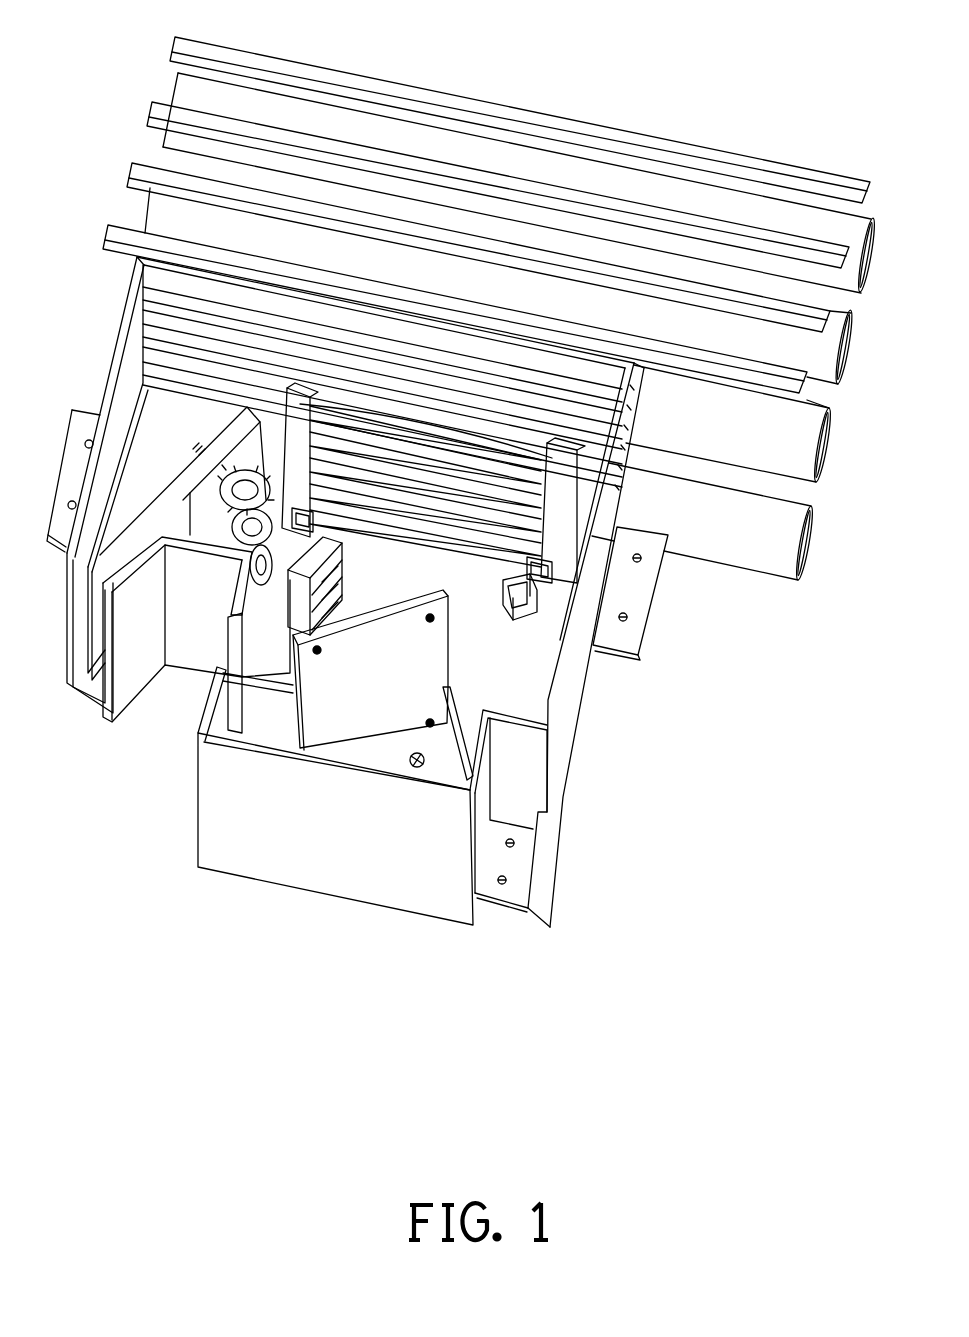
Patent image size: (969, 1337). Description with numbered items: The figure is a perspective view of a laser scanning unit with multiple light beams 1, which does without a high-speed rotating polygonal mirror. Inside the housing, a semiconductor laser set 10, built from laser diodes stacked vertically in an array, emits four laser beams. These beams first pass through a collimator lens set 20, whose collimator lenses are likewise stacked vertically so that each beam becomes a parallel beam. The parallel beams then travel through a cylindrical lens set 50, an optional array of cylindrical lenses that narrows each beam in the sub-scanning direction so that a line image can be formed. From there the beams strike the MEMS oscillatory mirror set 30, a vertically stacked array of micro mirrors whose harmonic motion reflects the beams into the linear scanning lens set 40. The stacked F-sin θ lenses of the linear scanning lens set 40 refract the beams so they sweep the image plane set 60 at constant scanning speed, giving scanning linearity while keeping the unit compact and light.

The laser scanning unit with multiple light beams 1 is at (630, 52).
The semiconductor laser set 10 is at (225, 416).
The collimator lens set 20 is at (228, 482).
The MEMS oscillatory mirror set 30 is at (461, 620).
The linear scanning lens set 40 is at (552, 531).
The cylindrical lens set 50 is at (345, 581).
The image plane set 60 is at (752, 584).